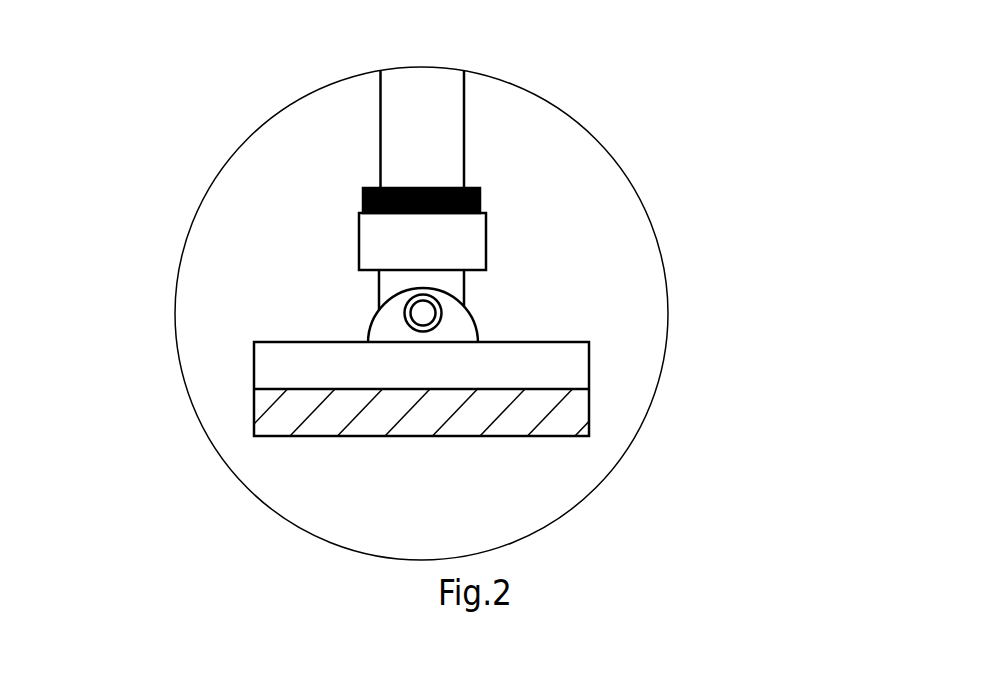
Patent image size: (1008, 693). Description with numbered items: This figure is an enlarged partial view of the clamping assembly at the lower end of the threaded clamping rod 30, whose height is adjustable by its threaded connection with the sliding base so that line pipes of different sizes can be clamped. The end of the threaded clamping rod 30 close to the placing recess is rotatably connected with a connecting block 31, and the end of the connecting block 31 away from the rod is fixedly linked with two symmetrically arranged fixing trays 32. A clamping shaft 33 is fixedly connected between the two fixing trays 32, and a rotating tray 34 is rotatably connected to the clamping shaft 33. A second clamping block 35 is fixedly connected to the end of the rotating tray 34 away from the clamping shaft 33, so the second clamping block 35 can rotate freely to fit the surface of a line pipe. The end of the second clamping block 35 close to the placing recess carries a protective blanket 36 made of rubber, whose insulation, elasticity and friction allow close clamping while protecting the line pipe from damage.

The threaded clamping rod 30 is at (422, 116).
The connecting block 31 is at (429, 241).
The fixing tray 32 is at (393, 282).
The clamping shaft 33 is at (440, 313).
The rotating tray 34 is at (392, 324).
The second clamping block 35 is at (428, 367).
The protective blanket 36 is at (386, 417).